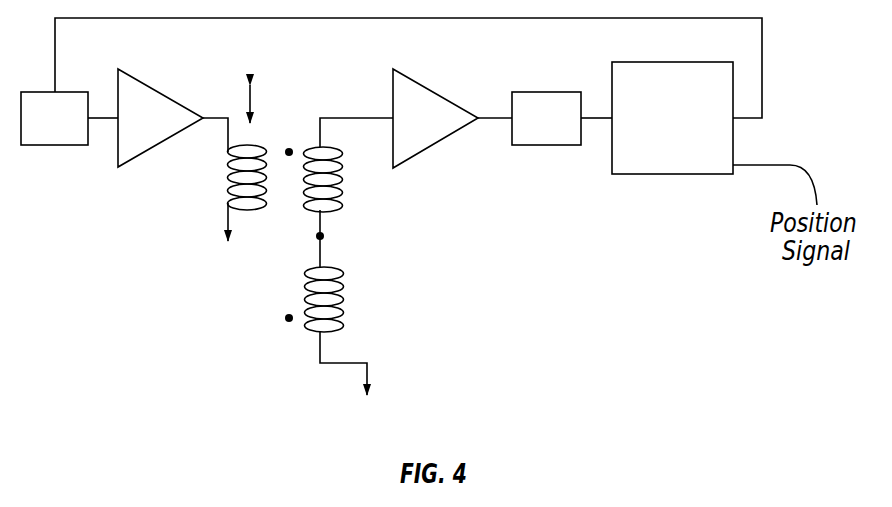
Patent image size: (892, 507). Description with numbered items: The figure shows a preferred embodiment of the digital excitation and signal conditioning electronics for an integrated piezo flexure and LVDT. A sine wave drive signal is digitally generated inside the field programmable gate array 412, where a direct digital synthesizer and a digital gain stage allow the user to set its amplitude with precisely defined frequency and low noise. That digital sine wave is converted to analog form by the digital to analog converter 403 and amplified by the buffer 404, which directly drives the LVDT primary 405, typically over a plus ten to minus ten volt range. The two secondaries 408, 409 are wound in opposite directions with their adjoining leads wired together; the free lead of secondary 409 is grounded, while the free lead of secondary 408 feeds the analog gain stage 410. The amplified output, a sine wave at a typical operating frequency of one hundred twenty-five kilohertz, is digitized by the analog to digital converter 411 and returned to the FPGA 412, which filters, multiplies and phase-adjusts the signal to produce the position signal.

The digital to analog converter 403 is at (73, 150).
The buffer 404 is at (132, 169).
The LVDT primary 405 is at (222, 208).
The secondary 408 is at (344, 208).
The secondary 409 is at (344, 335).
The analog gain stage 410 is at (391, 86).
The analog to digital converter 411 is at (527, 90).
The field programmable gate array 412 is at (636, 59).